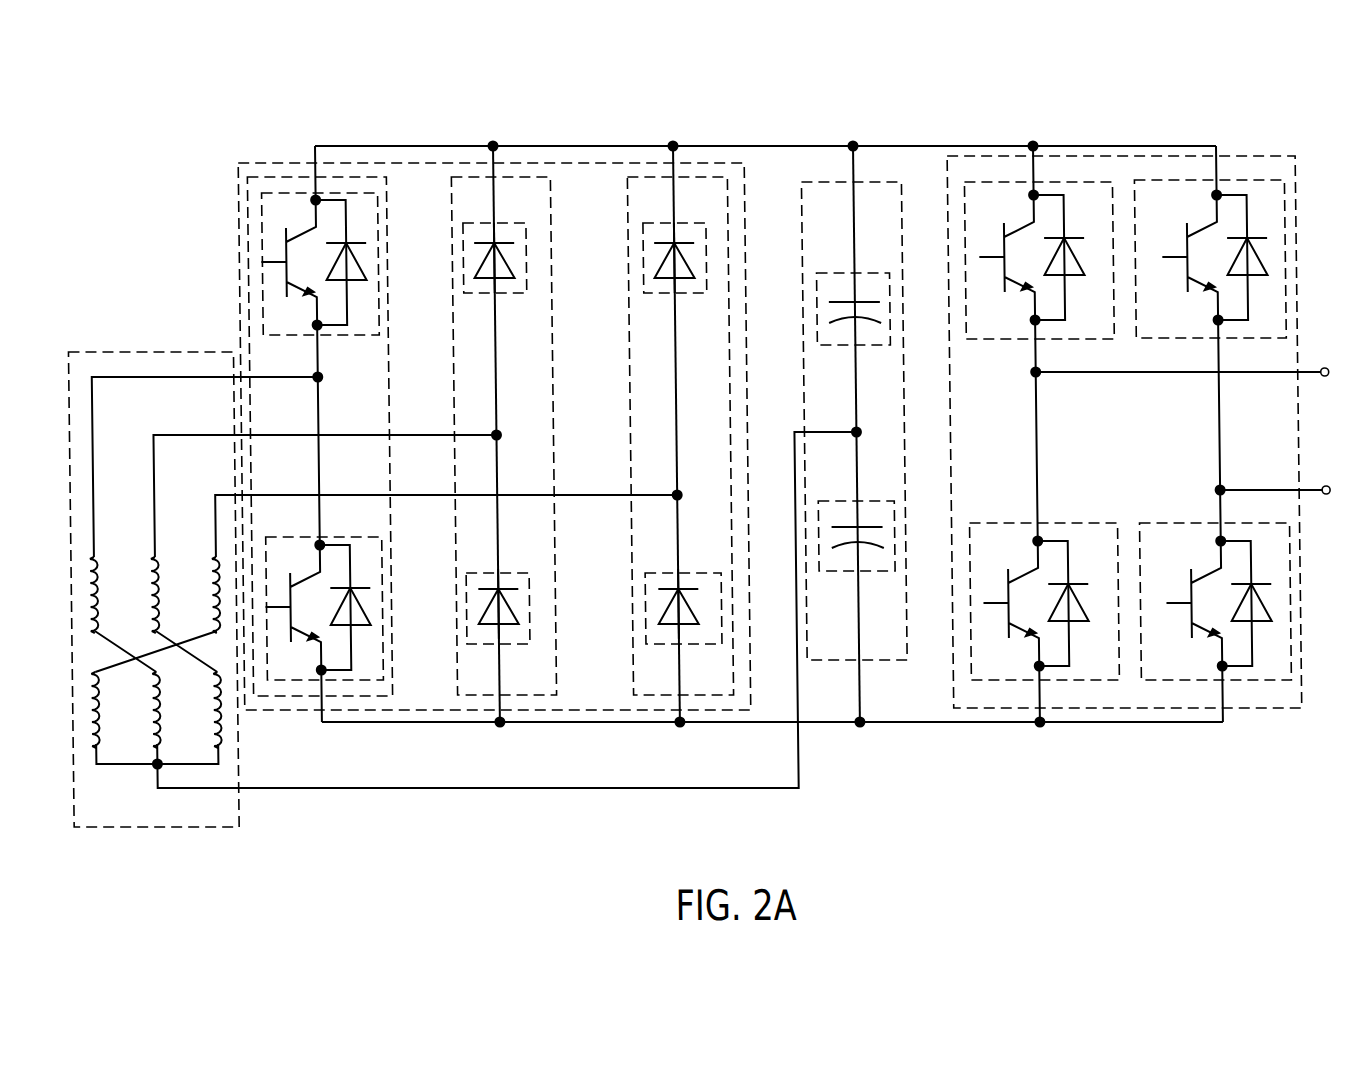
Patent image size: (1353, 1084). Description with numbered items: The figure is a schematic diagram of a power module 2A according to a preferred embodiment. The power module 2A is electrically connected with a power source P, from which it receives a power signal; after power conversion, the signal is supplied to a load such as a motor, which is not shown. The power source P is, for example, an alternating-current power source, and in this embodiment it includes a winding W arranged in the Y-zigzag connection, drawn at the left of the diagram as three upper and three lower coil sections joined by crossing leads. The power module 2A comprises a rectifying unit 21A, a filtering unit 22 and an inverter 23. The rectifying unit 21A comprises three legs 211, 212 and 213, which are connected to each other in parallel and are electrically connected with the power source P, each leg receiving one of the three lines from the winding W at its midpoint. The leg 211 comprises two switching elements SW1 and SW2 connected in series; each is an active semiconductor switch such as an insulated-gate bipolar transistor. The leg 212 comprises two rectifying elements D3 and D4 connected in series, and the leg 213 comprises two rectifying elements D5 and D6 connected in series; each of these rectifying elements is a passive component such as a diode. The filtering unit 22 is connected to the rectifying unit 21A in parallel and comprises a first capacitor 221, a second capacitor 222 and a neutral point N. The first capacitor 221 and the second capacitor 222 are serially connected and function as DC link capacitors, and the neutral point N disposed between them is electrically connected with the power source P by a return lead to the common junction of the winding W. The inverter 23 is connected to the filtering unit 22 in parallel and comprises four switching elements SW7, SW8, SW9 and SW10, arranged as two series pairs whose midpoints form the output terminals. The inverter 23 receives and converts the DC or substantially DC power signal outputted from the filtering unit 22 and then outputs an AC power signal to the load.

The power module 2A is at (164, 156).
The rectifying unit 21A is at (237, 320).
The leg 211 is at (364, 176).
The leg 212 is at (525, 176).
The leg 213 is at (699, 176).
The filtering unit 22 is at (877, 182).
The first capacitor 221 is at (878, 272).
The second capacitor 222 is at (872, 573).
The inverter 23 is at (1233, 153).
The switching element SW1 is at (281, 191).
The switching element SW2 is at (372, 690).
The switching element SW7 is at (1012, 182).
The switching element SW8 is at (1015, 682).
The switching element SW9 is at (1185, 180).
The switching element SW10 is at (1183, 682).
The rectifying element D3 is at (513, 297).
The rectifying element D4 is at (523, 572).
The rectifying element D5 is at (694, 297).
The rectifying element D6 is at (707, 572).
The neutral point N is at (521, 604).
The power source P is at (177, 350).
The winding W is at (135, 782).